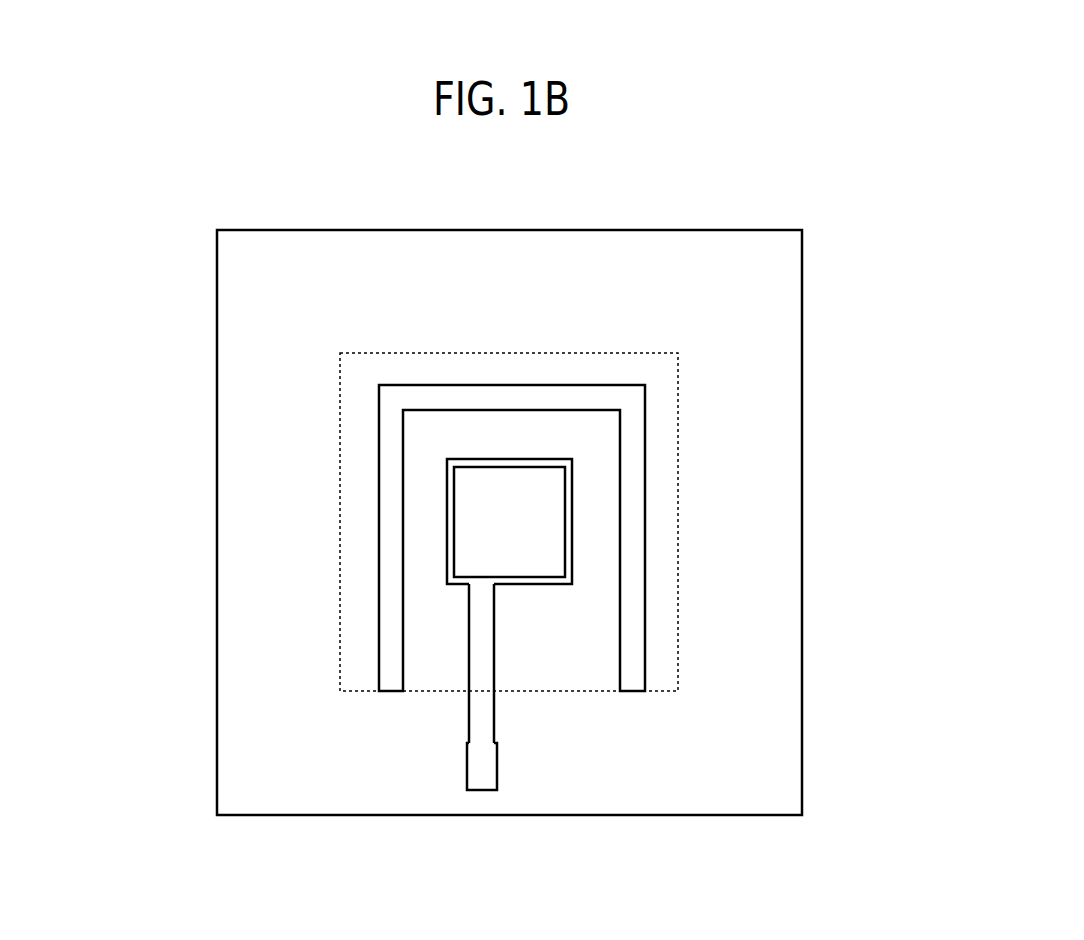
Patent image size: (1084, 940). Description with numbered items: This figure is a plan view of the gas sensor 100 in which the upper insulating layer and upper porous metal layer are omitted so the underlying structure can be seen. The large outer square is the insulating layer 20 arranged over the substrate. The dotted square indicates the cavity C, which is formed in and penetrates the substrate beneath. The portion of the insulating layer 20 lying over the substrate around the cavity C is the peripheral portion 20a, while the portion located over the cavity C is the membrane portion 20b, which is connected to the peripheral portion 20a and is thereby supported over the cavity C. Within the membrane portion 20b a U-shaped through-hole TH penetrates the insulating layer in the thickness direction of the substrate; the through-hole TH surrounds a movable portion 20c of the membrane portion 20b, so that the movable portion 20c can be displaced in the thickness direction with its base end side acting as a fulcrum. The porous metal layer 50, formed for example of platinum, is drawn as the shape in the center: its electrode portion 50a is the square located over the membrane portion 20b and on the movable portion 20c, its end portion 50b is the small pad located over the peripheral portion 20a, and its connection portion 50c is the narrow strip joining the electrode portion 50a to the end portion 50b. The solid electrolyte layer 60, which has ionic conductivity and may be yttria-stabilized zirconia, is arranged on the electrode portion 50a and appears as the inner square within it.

The gas sensor 100 is at (842, 174).
The insulating layer 20 is at (92, 475).
The peripheral portion 20a is at (237, 465).
The membrane portion 20b is at (360, 625).
The movable portion 20c is at (437, 666).
The cavity C is at (468, 352).
The through-hole TH is at (574, 397).
The porous metal layer 50 is at (907, 550).
The electrode portion 50a is at (568, 530).
The end portion 50b is at (484, 760).
The connection portion 50c is at (484, 639).
The solid electrolyte layer 60 is at (551, 482).